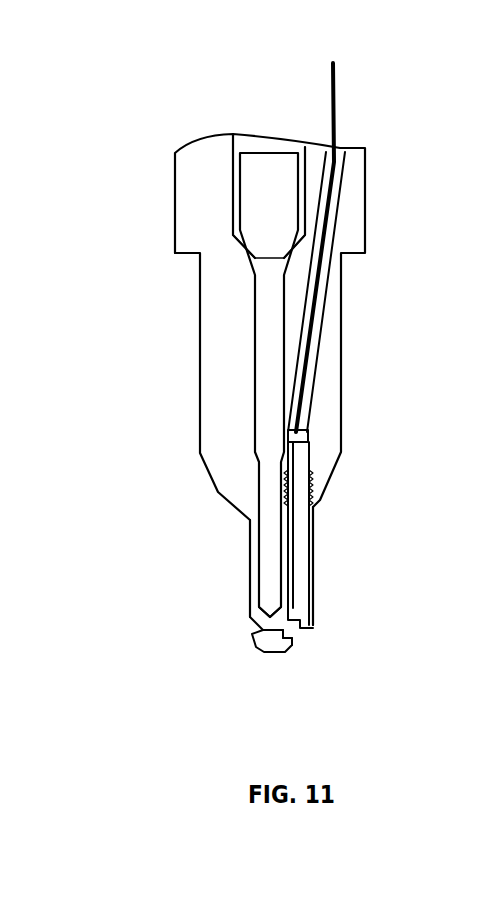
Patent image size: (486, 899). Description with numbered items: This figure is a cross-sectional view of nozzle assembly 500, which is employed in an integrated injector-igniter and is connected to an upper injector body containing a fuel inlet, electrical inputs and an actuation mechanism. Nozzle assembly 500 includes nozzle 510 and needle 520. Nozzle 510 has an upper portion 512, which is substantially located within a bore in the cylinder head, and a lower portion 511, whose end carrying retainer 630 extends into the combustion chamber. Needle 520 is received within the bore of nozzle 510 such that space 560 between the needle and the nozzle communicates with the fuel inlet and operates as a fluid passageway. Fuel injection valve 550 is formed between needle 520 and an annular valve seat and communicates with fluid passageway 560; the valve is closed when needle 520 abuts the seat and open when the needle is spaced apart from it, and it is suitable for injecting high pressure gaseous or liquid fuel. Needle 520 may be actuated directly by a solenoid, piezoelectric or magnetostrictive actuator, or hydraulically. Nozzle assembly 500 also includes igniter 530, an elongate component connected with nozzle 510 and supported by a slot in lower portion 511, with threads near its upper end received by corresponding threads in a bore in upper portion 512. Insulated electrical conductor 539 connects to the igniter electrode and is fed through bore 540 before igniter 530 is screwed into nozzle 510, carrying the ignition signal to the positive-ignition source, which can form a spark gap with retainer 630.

The nozzle assembly 500 is at (66, 156).
The nozzle 510 is at (200, 402).
The upper portion 512 is at (200, 324).
The space 560 is at (233, 237).
The needle 520 is at (263, 153).
The insulated electrical conductor 539 is at (341, 102).
The bore 540 is at (345, 160).
The igniter 530 is at (316, 527).
The lower portion 511 is at (250, 573).
The fuel injection valve 550 is at (290, 614).
The retainer 630 is at (258, 637).